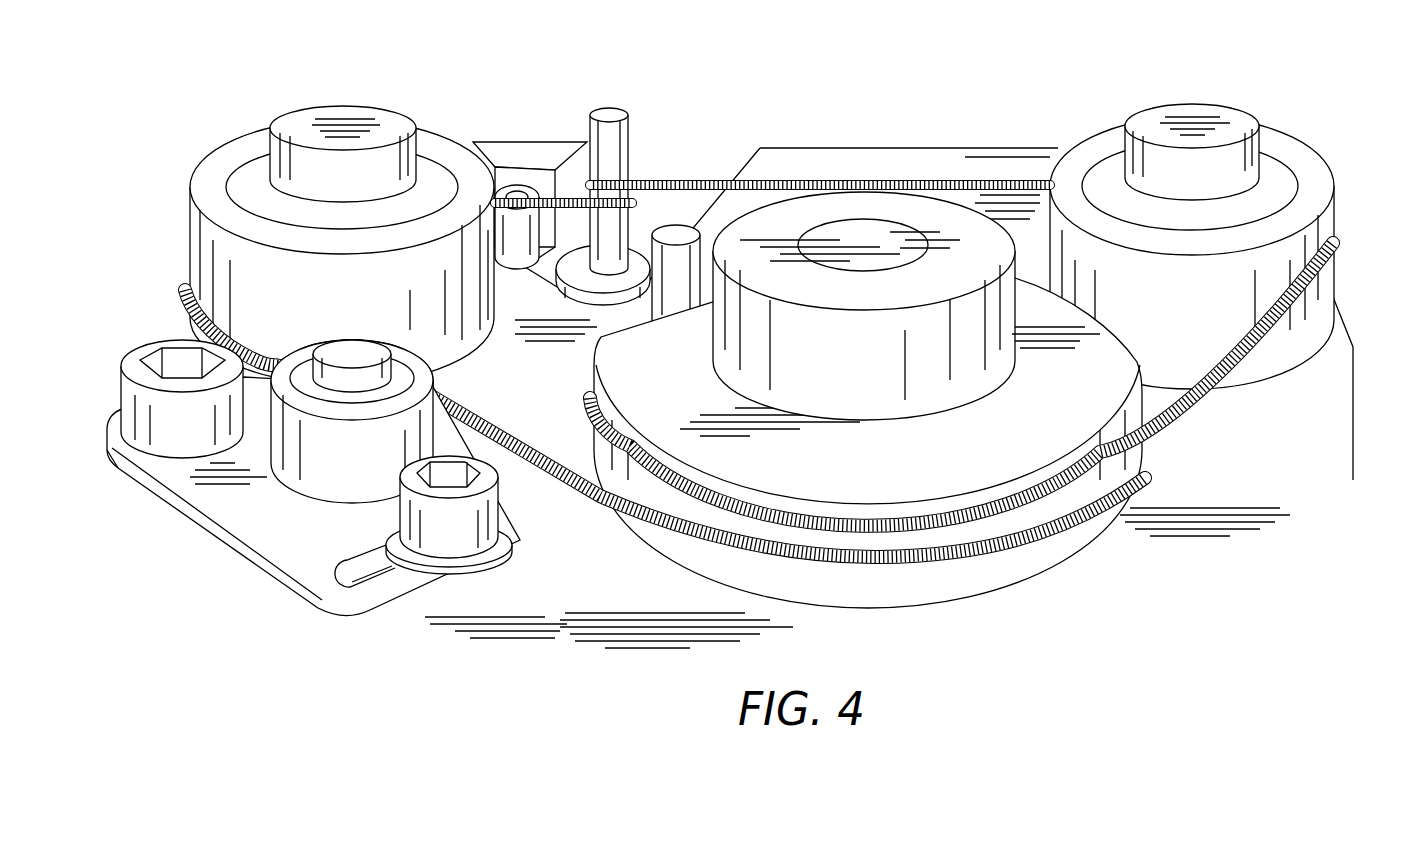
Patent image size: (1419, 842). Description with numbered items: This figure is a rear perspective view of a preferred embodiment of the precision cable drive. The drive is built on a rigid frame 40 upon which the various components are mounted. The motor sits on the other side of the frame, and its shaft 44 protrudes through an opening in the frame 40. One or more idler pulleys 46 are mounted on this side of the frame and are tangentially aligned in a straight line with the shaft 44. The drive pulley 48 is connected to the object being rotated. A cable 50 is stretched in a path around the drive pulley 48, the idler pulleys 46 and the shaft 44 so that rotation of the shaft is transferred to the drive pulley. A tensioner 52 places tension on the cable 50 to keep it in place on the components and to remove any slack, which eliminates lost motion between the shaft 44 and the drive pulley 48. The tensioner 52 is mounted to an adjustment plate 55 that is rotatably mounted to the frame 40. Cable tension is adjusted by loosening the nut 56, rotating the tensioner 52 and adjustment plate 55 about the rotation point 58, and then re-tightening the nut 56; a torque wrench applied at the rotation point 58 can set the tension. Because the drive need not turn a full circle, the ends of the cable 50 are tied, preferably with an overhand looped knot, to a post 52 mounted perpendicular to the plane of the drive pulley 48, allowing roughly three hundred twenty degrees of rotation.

The rigid frame 40 is at (1338, 437).
The shaft 44 is at (607, 112).
The idler pulleys 46 is at (397, 122).
The drive pulley 48 is at (866, 205).
The cable 50 is at (1203, 398).
The tensioner 52 is at (676, 237).
The adjustment plate 55 is at (320, 583).
The nut 56 is at (503, 493).
The rotation point 58 is at (140, 432).